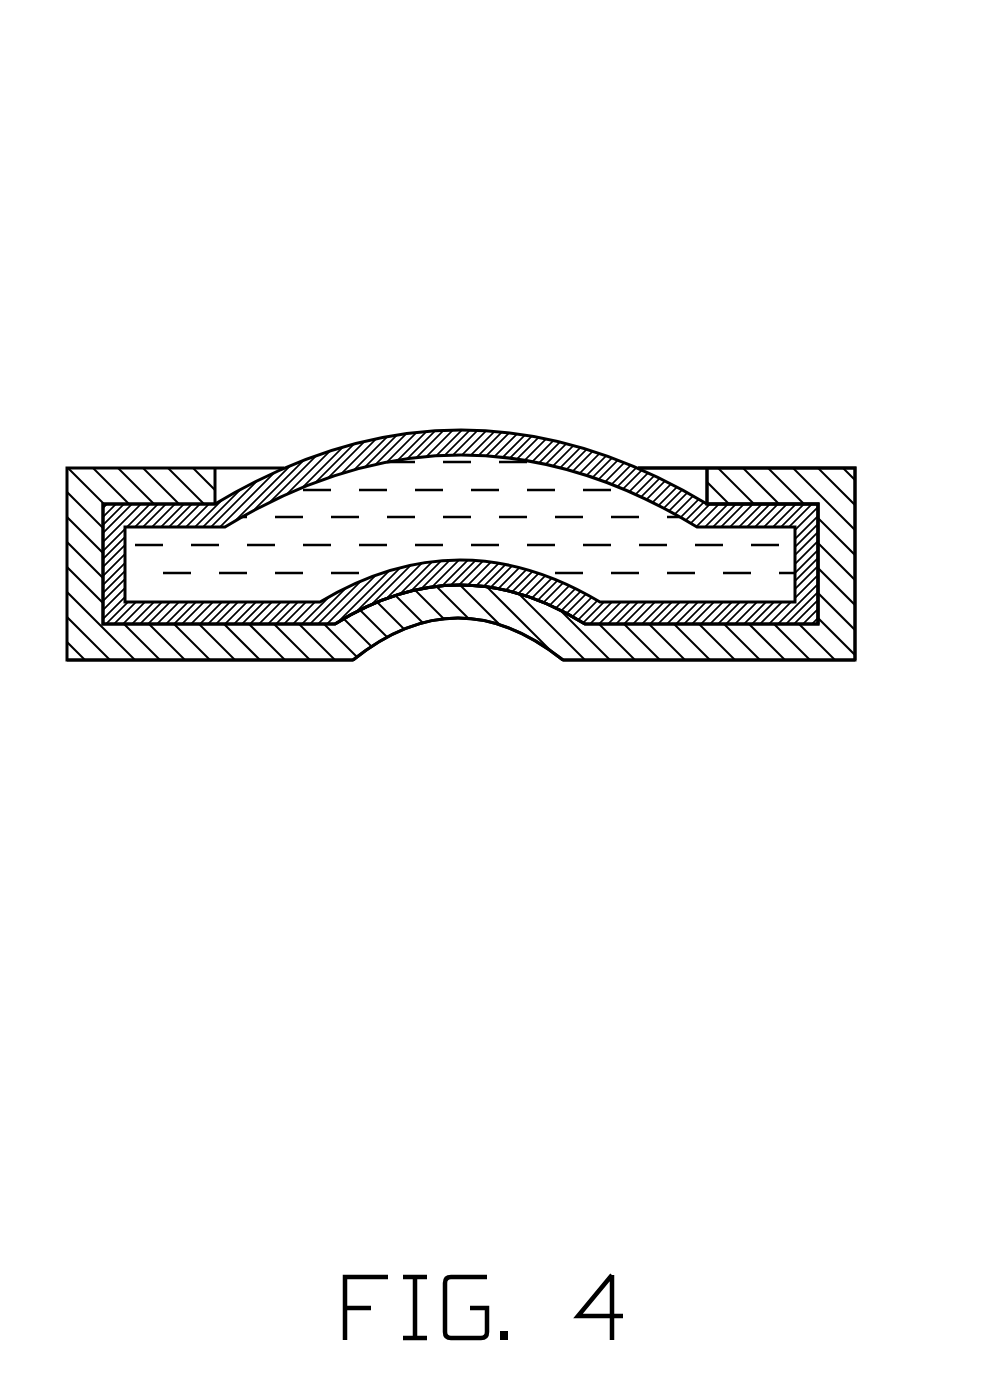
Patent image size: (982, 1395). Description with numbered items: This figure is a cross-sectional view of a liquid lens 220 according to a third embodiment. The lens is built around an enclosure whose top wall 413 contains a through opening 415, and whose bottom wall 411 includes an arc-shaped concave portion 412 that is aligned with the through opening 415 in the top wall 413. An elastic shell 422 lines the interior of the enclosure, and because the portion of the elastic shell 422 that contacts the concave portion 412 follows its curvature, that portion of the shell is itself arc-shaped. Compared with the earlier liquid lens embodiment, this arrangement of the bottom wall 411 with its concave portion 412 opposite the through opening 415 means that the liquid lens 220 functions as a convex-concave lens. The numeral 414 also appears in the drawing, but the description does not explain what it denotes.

The liquid lens 220 is at (491, 438).
The bottom wall 411 is at (491, 610).
The arc-shaped concave portion 412 is at (460, 679).
The top wall 413 is at (746, 503).
The bottom portion of first substrate 414 is at (461, 709).
The through opening 415 is at (461, 393).
The elastic shell 422 is at (491, 522).